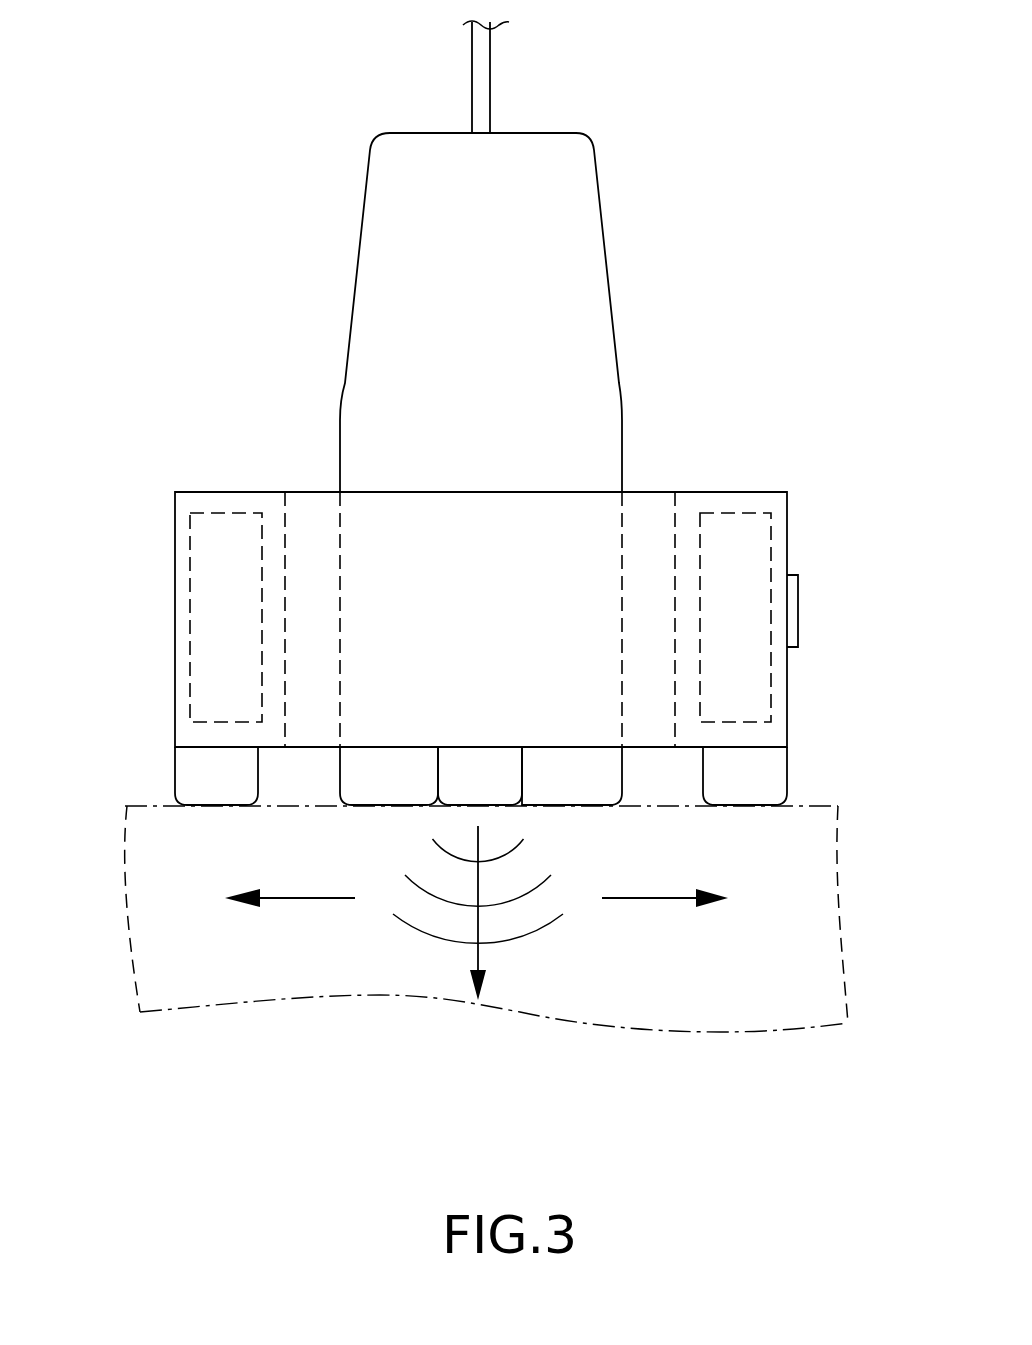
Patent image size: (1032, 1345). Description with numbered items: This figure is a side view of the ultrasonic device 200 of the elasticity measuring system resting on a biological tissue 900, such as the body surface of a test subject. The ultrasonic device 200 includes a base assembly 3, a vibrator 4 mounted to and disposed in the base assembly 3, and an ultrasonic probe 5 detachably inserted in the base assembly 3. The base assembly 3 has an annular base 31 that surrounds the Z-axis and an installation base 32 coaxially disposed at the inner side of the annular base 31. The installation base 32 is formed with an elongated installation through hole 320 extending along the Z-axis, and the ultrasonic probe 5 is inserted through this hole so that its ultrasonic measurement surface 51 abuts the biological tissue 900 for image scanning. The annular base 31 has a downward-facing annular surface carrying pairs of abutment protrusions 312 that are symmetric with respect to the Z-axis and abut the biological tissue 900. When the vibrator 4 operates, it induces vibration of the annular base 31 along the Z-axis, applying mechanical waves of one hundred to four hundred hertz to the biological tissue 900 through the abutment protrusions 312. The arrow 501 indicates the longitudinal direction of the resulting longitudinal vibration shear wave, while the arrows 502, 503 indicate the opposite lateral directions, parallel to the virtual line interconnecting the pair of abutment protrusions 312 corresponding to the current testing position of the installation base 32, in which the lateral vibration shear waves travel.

The ultrasonic device 200 is at (578, 90).
The ultrasonic probe 5 is at (420, 163).
The base assembly 3 is at (182, 492).
The annular base 31 is at (226, 505).
The installation base 32 is at (641, 515).
The installation through hole 320 is at (622, 592).
The vibrator 4 is at (753, 547).
The abutment protrusions 312 is at (770, 775).
The ultrasonic measurement surface 51 is at (573, 806).
The biological tissue 900 is at (192, 962).
The arrow indicating longitudinal direction 501 is at (470, 990).
The arrow indicating lateral direction 502 is at (660, 898).
The arrow indicating lateral direction 503 is at (300, 898).